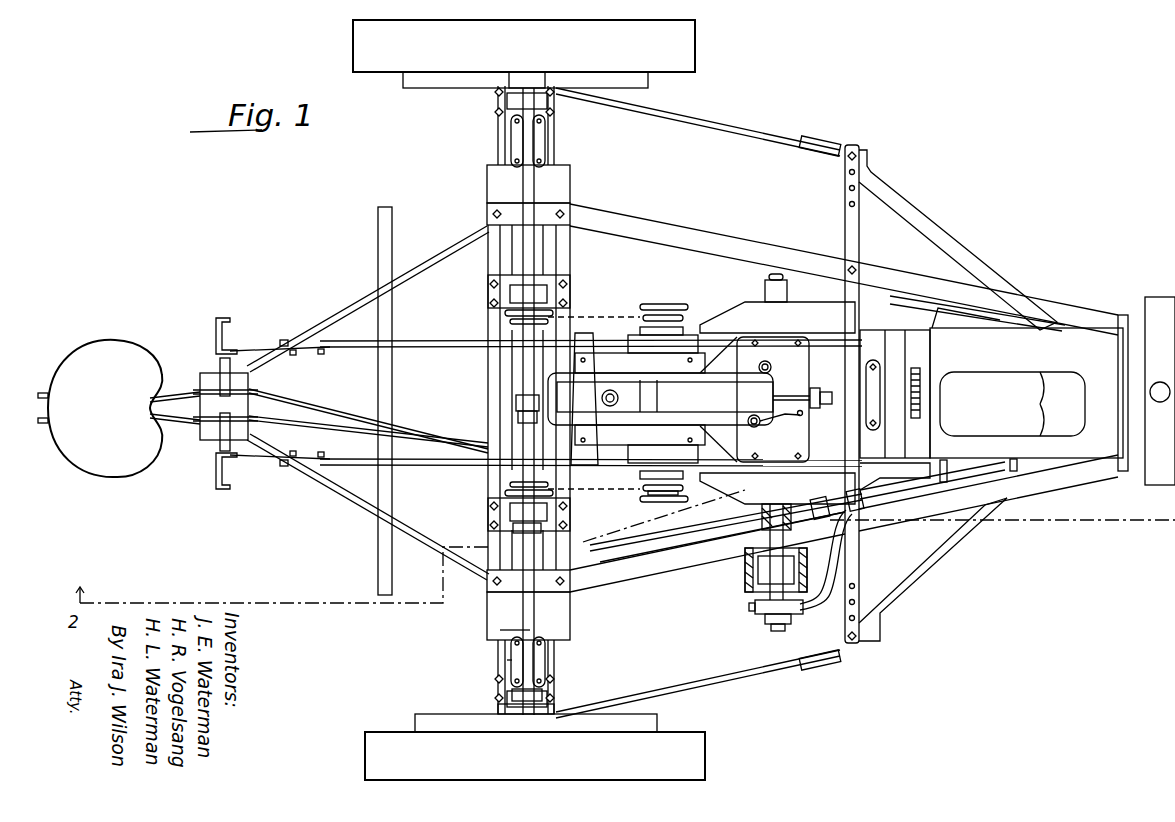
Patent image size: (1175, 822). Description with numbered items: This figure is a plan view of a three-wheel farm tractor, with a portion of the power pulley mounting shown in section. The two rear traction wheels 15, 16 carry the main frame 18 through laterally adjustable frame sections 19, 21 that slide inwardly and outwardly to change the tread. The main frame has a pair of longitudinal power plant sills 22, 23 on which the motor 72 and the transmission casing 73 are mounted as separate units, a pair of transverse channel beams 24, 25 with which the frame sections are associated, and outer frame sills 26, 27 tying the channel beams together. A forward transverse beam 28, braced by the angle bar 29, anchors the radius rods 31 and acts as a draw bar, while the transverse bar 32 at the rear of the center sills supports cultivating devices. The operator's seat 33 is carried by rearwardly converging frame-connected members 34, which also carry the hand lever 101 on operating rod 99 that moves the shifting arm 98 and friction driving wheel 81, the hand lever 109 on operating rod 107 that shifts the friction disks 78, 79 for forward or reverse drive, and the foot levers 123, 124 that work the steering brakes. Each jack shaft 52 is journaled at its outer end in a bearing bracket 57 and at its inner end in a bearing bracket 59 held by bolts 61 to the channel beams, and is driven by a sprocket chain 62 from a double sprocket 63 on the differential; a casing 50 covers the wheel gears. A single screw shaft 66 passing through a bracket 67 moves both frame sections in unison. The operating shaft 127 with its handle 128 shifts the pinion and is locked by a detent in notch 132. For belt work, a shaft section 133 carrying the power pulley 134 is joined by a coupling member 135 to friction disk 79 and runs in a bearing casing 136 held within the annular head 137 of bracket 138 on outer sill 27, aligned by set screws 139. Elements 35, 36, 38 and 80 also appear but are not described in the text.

The rear traction wheel 15 is at (545, 56).
The rear traction wheel 16 is at (548, 764).
The main frame 18 is at (1040, 478).
The laterally adjustable frame section 19 is at (497, 144).
The laterally adjustable frame section 21 is at (560, 661).
The longitudinal power plant sill 22 is at (434, 341).
The longitudinal power plant sill 23 is at (436, 468).
The transverse channel beam 24 is at (570, 612).
The transverse channel beam 25 is at (495, 612).
The outer frame sill 26 is at (683, 230).
The outer frame sill 27 is at (652, 570).
The transverse beam 28 is at (845, 224).
The angle bar 29 is at (930, 232).
The radius rod 31 is at (745, 133).
The transverse bar 32 is at (387, 210).
The operator's seat 33 is at (119, 408).
The rearwardly converging frame-connected member 34 is at (362, 300).
The bearing 35 is at (548, 672).
The bearing 36 is at (507, 670).
The bearing 38 is at (509, 655).
The casing 50 is at (470, 84).
The jack shaft 52 is at (500, 628).
The bearing bracket 57 is at (511, 696).
The bearing bracket 59 is at (512, 526).
The bolt 61 is at (505, 489).
The sprocket chain 62 is at (612, 316).
The sprocket 63 is at (662, 493).
The screw shaft 66 is at (520, 362).
The bracket 67 is at (515, 400).
The motor 72 is at (1052, 391).
The transmission casing 73 is at (754, 399).
The friction disk 78 is at (818, 312).
The friction disk 79 is at (712, 473).
The gear 80 is at (895, 394).
The friction driving wheel 81 is at (868, 476).
The shifting arm 98 is at (875, 360).
The operating rod 99 is at (302, 426).
The manually operable lever 101 is at (222, 442).
The operating rod 107 is at (517, 417).
The hand lever 109 is at (222, 362).
The foot lever 123 is at (228, 330).
The foot lever 124 is at (220, 490).
The operating shaft 127 is at (752, 415).
The arm or handle 128 is at (790, 428).
The notch 132 is at (787, 423).
The shaft section 133 is at (750, 533).
The power pulley 134 is at (744, 585).
The coupling member 135 is at (765, 512).
The bearing casing 136 is at (782, 630).
The annular head 137 is at (766, 622).
The bracket 138 is at (835, 560).
The set screw 139 is at (748, 608).